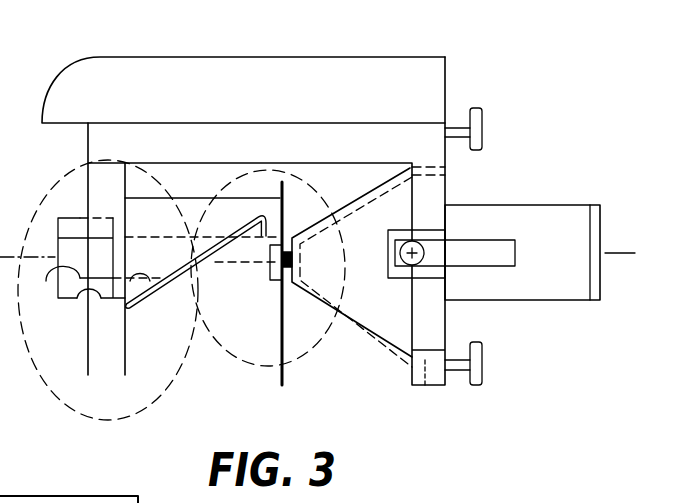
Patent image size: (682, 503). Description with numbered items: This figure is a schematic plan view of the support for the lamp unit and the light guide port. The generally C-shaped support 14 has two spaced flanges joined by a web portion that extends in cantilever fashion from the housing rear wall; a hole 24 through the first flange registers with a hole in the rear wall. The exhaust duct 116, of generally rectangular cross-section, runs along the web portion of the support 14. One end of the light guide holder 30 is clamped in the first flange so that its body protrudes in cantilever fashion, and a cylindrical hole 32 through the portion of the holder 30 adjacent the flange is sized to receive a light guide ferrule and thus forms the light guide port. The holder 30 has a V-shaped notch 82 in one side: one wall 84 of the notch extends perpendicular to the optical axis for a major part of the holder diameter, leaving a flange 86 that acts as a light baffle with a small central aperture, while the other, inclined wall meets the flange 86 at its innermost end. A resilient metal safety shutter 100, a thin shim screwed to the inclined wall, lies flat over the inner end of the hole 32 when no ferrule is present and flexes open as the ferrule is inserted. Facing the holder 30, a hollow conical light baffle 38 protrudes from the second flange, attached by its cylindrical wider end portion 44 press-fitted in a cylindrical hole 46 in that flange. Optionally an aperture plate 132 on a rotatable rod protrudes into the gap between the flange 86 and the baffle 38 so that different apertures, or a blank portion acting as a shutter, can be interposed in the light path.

The support 14 is at (404, 134).
The hole 24 is at (84, 298).
The light guide holder 30 is at (192, 172).
The cylindrical hole 32 is at (47, 282).
The conical light baffle 38 is at (362, 352).
The wider end portion 44 is at (429, 350).
The hole 46 is at (428, 388).
The V-shaped notch 82 is at (127, 314).
The wall of the notch 84 is at (277, 300).
The flange 86 is at (284, 302).
The safety shutter 100 is at (157, 304).
The exhaust duct 116 is at (334, 80).
The plate 132 is at (282, 372).